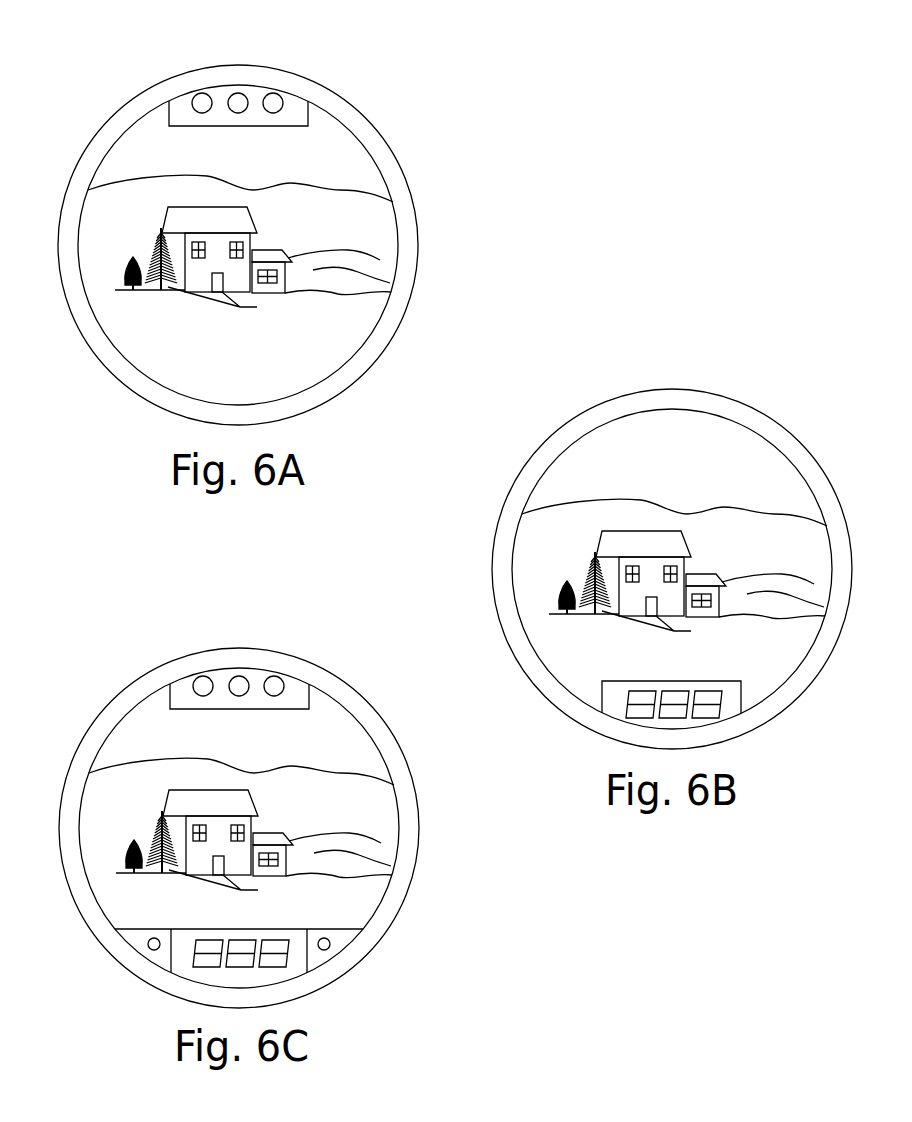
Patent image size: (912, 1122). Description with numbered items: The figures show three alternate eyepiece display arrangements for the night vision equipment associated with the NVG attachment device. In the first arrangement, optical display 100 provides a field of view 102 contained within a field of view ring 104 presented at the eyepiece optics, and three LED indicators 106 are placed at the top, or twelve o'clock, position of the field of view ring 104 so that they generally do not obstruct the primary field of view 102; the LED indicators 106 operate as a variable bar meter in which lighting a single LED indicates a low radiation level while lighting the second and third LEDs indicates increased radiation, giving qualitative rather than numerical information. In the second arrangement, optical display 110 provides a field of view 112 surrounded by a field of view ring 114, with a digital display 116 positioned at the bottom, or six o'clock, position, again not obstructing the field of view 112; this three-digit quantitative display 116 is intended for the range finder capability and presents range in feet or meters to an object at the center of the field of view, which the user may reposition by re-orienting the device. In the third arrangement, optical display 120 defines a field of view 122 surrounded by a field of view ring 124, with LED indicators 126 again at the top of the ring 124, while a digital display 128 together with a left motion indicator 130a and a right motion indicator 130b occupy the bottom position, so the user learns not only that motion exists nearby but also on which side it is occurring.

In FIG. 6A, the optical display 100 is at (257, 220).
In FIG. 6A, the field of view 102 is at (330, 357).
In FIG. 6A, the field of view ring 104 is at (375, 130).
In FIG. 6A, the LED indicators 106 is at (183, 126).
In FIG. 6B, the optical display 110 is at (635, 533).
In FIG. 6B, the field of view 112 is at (623, 446).
In FIG. 6B, the field of view ring 114 is at (493, 588).
In FIG. 6B, the digital display 116 is at (652, 681).
In FIG. 6C, the optical display 120 is at (263, 808).
In FIG. 6C, the field of view 122 is at (343, 918).
In FIG. 6C, the field of view ring 124 is at (420, 845).
In FIG. 6C, the LED indicators 126 is at (186, 709).
In FIG. 6C, the digital display 128 is at (204, 939).
In FIG. 6C, the left motion indicator 130a is at (150, 950).
In FIG. 6C, the right motion indicator 130b is at (330, 950).